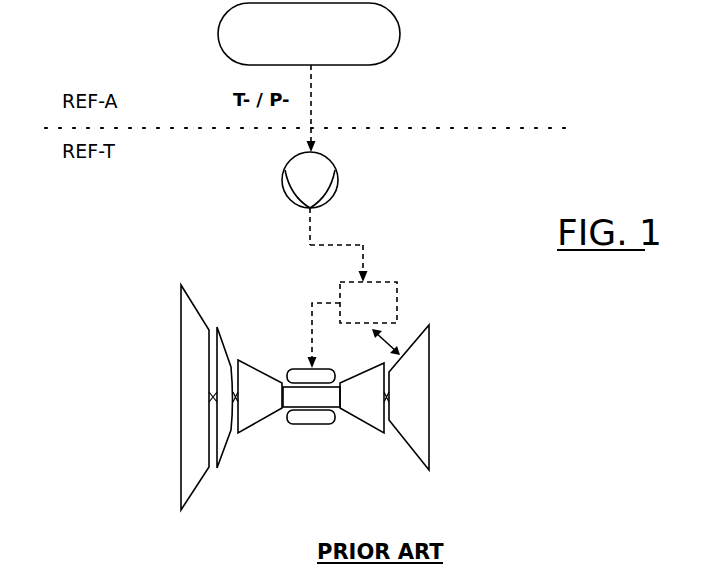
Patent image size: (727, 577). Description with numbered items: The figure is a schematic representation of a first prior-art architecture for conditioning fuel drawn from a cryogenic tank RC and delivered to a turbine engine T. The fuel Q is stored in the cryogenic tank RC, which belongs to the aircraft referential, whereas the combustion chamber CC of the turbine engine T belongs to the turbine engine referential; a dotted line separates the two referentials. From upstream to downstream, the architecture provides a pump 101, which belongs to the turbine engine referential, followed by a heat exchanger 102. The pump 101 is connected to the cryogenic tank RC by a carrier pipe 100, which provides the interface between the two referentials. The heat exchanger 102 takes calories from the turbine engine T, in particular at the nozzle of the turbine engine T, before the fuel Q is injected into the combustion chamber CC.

The carrier pipe 100 is at (311, 108).
The pump 101 is at (338, 180).
The heat exchanger 102 is at (397, 300).
The cryogenic tank RC is at (400, 34).
The turbine engine T is at (150, 348).
The combustion chamber CC is at (305, 424).